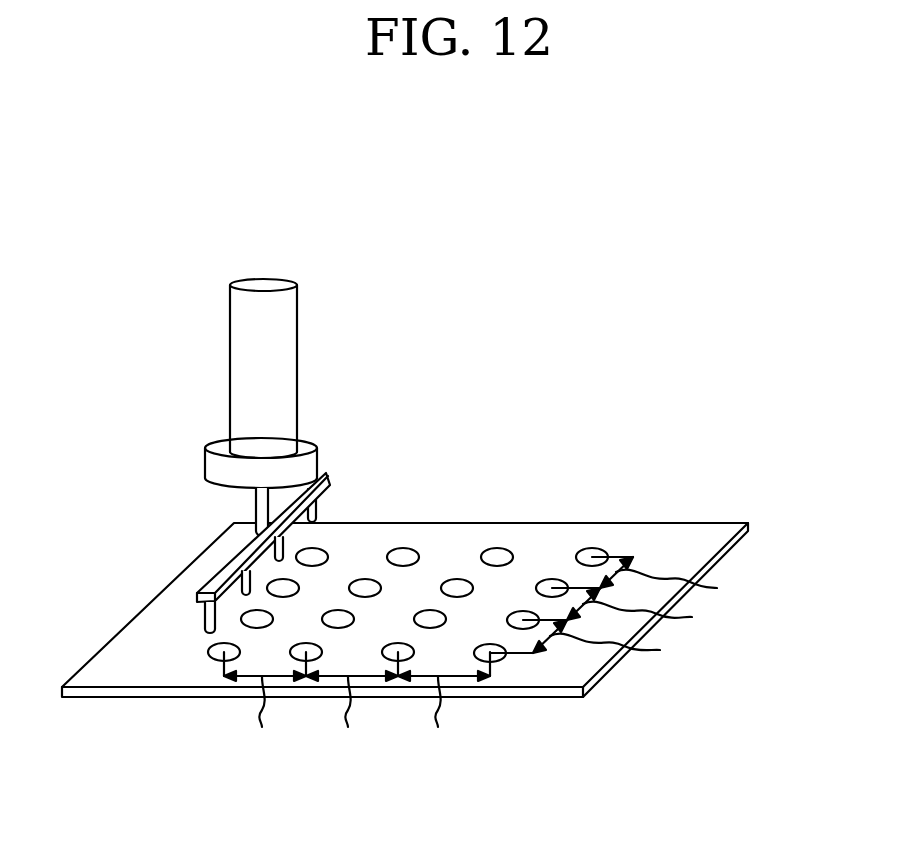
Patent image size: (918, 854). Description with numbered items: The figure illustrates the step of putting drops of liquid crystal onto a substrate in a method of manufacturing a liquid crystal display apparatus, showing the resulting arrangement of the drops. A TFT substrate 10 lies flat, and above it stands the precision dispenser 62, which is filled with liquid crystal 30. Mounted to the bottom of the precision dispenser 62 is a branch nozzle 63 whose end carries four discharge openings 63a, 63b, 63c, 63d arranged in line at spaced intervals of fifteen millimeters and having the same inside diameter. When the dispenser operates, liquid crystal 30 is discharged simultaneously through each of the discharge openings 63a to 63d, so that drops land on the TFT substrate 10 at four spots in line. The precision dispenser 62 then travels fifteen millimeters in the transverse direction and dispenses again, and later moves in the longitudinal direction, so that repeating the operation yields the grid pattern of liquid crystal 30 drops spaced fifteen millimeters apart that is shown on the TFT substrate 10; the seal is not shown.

The TFT substrate 10 is at (714, 535).
The liquid crystal 30 is at (498, 548).
The precision dispenser 62 is at (262, 287).
The branch nozzle 63 is at (257, 503).
The discharge opening 63a is at (204, 607).
The discharge opening 63b is at (252, 558).
The discharge opening 63c is at (263, 560).
The discharge opening 63d is at (325, 487).